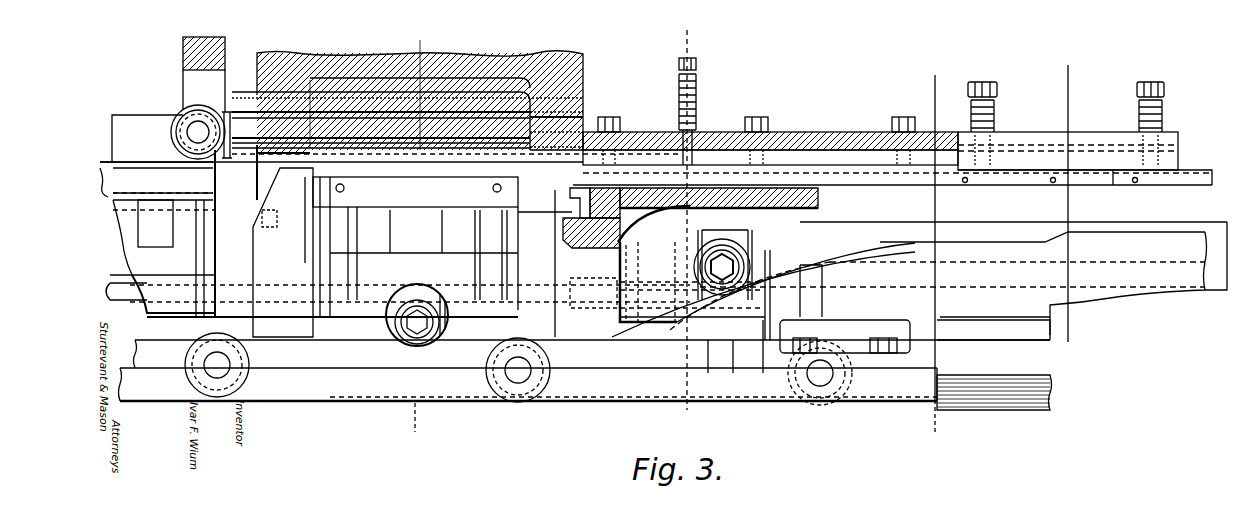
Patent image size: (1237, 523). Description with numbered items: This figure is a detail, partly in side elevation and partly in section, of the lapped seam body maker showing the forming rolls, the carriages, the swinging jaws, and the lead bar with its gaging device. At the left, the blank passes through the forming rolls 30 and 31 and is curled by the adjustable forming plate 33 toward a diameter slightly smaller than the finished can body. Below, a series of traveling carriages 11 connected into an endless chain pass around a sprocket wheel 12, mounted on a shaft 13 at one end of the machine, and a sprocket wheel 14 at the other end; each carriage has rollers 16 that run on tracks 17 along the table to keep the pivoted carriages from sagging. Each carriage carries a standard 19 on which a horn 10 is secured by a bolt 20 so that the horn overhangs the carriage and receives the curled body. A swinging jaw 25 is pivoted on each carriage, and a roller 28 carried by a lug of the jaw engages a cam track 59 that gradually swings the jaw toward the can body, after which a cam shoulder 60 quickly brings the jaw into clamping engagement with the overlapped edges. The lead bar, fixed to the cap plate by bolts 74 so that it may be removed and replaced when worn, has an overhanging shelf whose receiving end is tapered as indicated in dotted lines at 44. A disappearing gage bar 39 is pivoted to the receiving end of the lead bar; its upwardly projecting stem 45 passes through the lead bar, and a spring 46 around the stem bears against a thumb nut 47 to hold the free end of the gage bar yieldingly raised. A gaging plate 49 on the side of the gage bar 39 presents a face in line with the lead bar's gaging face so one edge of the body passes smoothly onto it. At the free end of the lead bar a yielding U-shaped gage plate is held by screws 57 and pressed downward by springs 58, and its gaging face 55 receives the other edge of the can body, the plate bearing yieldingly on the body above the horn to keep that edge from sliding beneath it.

The horn 10 is at (780, 240).
The traveling carriage 11 is at (395, 234).
The sprocket wheel 12 is at (683, 228).
The shaft 13 is at (933, 257).
The sprocket wheel 14 is at (1010, 228).
The roller 16 is at (238, 378).
The track 17 is at (618, 392).
The standard 19 is at (588, 240).
The bolt 20 is at (568, 206).
The swinging jaw 25 is at (545, 264).
The roller 28 is at (442, 298).
The forming roll 30 is at (475, 100).
The forming roll 31 is at (428, 133).
The forming plate 33 is at (166, 102).
The gage bar 39 is at (897, 180).
The tapered receiving end of shelf 44 is at (585, 132).
The stem 45 is at (698, 130).
The spring 46 is at (698, 95).
The thumb nut 47 is at (698, 66).
The gaging plate 49 is at (1117, 185).
The gaging face 55 is at (1098, 155).
The screw 57 is at (990, 84).
The spring 58 is at (997, 112).
The cam track 59 is at (862, 270).
The cam shoulder 60 is at (1058, 236).
The bolt 74 is at (622, 122).